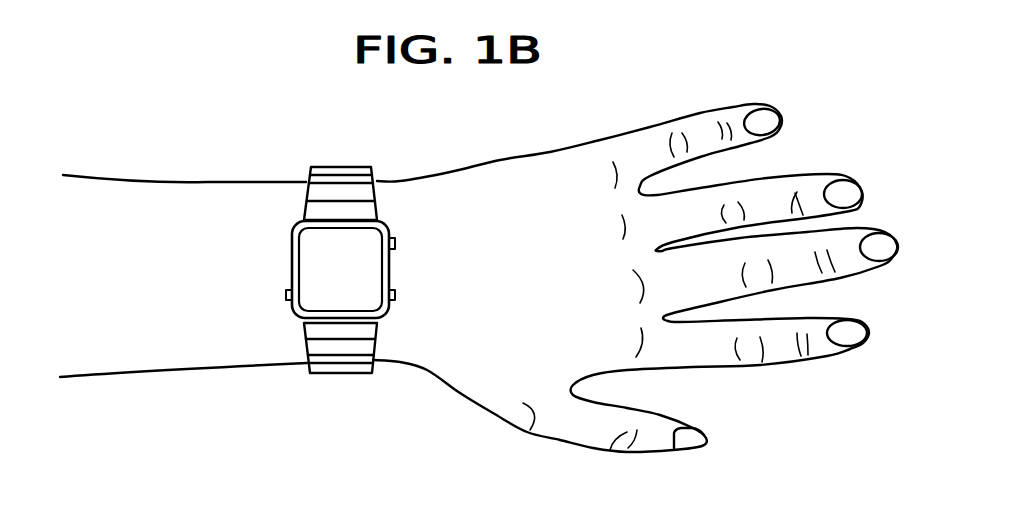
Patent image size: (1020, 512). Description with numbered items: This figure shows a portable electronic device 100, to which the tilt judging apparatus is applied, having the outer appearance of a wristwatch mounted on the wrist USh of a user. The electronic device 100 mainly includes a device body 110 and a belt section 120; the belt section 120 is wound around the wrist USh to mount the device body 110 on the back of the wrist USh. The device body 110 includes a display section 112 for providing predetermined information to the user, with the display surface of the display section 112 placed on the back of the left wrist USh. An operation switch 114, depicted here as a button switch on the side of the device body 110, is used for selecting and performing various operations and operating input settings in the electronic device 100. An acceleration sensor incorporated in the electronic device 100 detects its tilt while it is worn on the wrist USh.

The portable electronic device 100 is at (349, 229).
The device body 110 is at (349, 268).
The display section 112 is at (305, 257).
The operation switch 114 is at (395, 245).
The belt section 120 is at (350, 168).
The wrist of the user USh is at (253, 350).